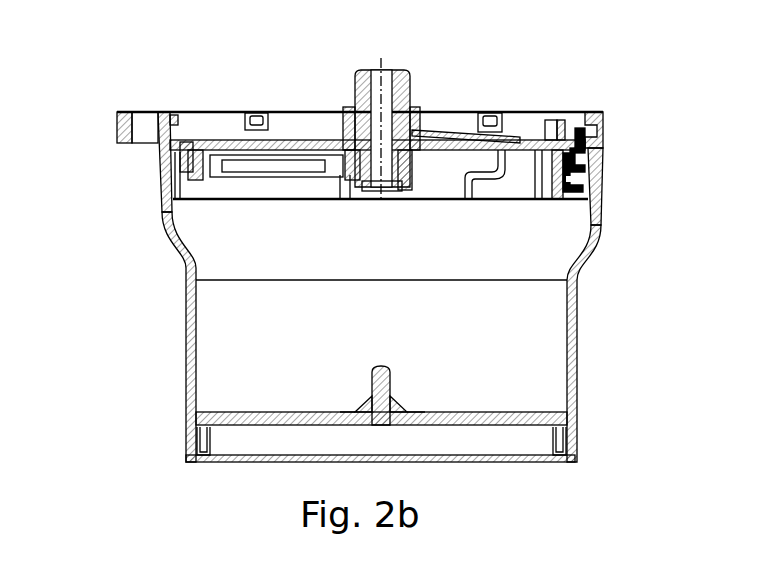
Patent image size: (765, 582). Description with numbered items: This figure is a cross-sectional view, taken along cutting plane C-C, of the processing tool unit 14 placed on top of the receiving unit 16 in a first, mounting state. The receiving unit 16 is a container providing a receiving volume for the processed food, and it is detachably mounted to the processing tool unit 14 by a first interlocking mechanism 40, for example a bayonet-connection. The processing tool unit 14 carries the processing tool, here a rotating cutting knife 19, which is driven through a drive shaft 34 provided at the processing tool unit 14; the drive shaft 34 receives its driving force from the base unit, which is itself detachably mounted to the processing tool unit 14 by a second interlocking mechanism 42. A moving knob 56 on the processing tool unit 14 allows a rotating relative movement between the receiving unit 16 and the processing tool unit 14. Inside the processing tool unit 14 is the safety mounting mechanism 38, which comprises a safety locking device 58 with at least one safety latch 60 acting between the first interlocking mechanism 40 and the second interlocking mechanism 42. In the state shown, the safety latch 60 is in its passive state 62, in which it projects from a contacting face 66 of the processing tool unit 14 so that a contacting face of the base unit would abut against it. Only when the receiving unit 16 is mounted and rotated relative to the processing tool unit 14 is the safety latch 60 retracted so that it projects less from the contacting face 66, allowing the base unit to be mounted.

The processing tool unit 14 is at (644, 129).
The receiving unit 16 is at (596, 297).
The rotating cutting knife 19 is at (463, 129).
The drive shaft 34 is at (400, 73).
The safety mounting mechanism 38 is at (624, 182).
The first interlocking mechanism 40 is at (144, 182).
The second interlocking mechanism 42 is at (159, 101).
The moving knob 56 is at (112, 134).
The safety locking device 58 is at (612, 128).
The safety latch 60 is at (580, 136).
The passive state 62 is at (553, 210).
The contacting face 66 is at (577, 127).